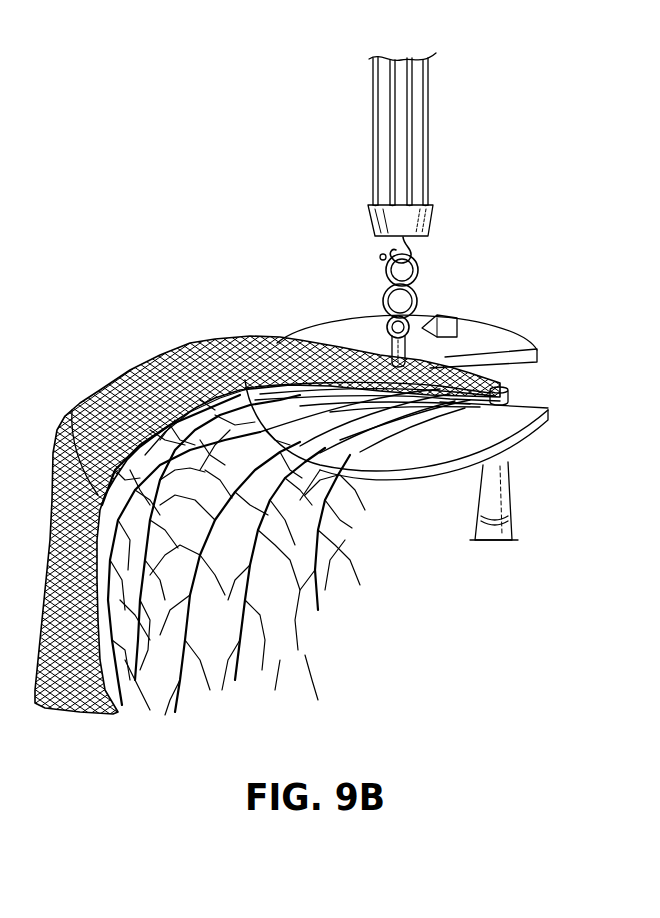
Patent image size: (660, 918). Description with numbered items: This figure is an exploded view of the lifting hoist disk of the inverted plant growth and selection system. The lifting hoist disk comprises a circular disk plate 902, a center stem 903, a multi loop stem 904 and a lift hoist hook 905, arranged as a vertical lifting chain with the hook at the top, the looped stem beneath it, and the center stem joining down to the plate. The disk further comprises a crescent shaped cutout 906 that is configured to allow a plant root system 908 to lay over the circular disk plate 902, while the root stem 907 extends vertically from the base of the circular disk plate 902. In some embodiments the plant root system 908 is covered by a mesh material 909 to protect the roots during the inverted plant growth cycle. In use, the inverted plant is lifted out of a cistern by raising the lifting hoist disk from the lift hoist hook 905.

The circular disk plate 902 is at (470, 340).
The center stem 903 is at (401, 347).
The multi loop stem 904 is at (382, 279).
The lift hoist hook 905 is at (388, 214).
The crescent shaped cutout 906 is at (527, 376).
The root stem 907 is at (497, 515).
The plant root system 908 is at (205, 490).
The mesh material 909 is at (170, 361).